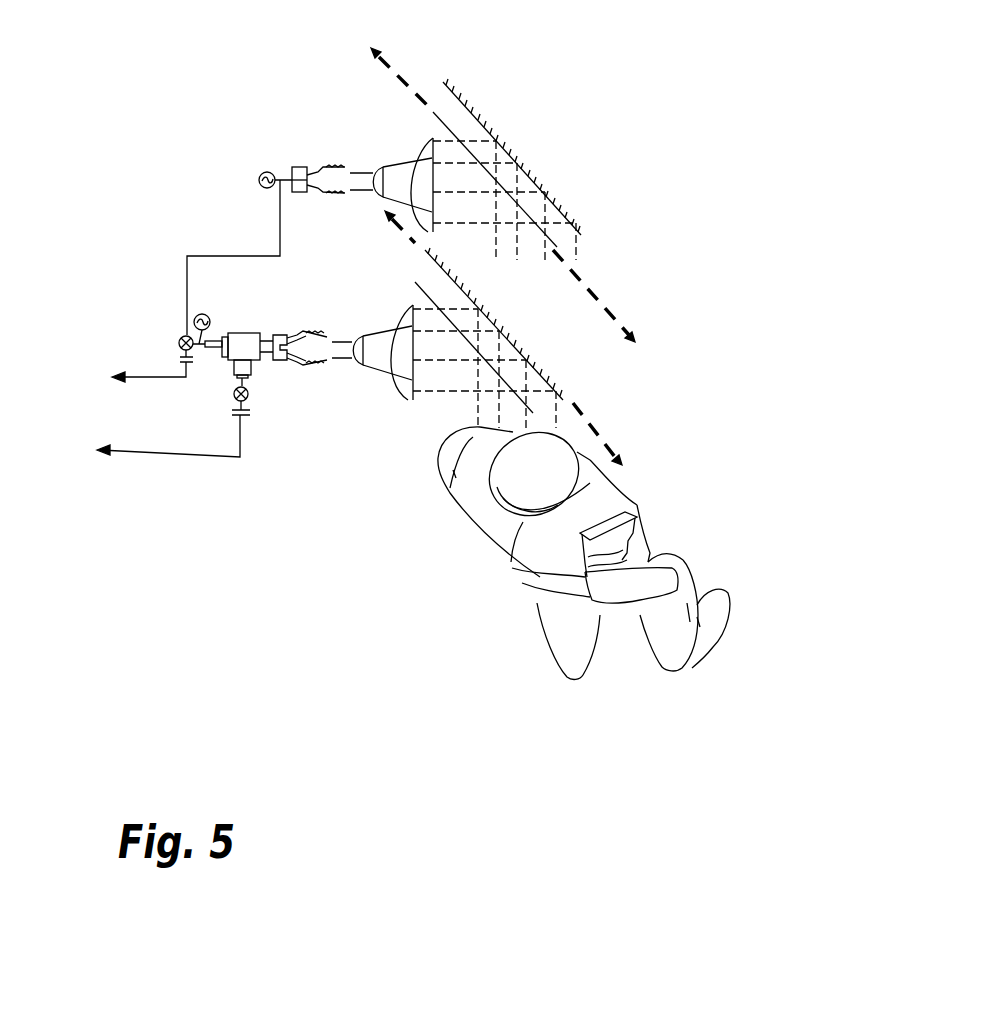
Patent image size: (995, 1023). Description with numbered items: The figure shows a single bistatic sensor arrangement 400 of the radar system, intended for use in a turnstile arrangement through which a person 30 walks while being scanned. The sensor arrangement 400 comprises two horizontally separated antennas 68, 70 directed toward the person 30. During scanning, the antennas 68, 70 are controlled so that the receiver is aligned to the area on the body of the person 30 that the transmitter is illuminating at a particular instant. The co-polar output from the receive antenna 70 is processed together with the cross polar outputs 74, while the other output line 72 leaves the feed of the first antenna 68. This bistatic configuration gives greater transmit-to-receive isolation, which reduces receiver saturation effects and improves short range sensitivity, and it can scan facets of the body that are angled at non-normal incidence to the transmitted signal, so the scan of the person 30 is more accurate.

The person 30 is at (615, 640).
The antenna 68 is at (506, 124).
The receive antenna 70 is at (547, 375).
The first output 72 is at (137, 382).
The cross polar outputs 74 is at (160, 462).
The sensor arrangement 400 is at (632, 241).